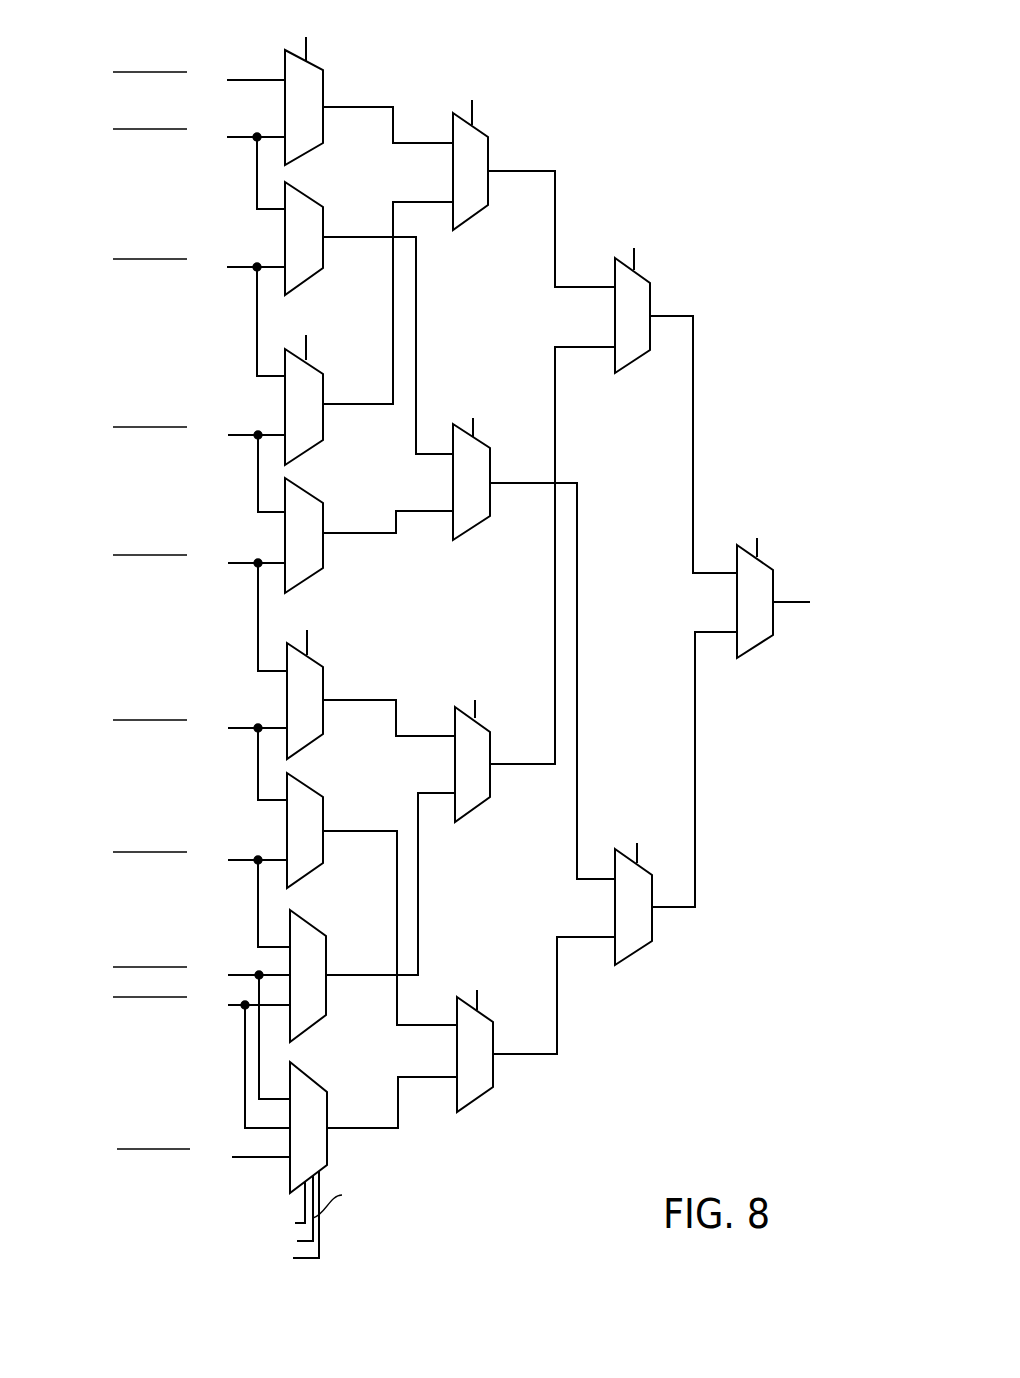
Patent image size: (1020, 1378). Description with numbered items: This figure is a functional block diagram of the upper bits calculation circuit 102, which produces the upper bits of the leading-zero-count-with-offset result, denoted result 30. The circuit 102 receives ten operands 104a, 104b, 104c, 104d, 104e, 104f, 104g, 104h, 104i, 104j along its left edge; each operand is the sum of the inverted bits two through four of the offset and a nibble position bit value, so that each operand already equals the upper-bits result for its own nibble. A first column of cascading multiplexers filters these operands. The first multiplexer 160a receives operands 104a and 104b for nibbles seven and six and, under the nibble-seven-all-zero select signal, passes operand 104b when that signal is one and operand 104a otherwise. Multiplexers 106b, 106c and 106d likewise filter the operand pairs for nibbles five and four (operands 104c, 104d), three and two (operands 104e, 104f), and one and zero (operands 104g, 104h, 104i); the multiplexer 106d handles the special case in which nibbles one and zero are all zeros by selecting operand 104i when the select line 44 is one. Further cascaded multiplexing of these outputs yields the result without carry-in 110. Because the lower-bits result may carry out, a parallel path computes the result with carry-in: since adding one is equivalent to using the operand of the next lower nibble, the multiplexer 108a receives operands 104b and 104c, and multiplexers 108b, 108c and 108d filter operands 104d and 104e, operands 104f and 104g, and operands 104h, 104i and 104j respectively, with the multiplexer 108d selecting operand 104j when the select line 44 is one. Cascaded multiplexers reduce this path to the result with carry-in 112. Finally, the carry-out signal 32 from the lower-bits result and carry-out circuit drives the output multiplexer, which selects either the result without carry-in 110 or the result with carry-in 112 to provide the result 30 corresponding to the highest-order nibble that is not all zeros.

The upper bits calculation circuit 102 is at (633, 63).
The operand 104a is at (110, 78).
The operand 104b is at (110, 135).
The operand 104c is at (110, 265).
The operand 104d is at (110, 433).
The operand 104e is at (110, 562).
The operand 104f is at (110, 727).
The operand 104g is at (110, 858).
The operand 104h is at (112, 973).
The operand 104i is at (112, 1003).
The operand 104j is at (108, 1157).
The multiplexer (N76 without carry-in) 160a is at (283, 51).
The MUX 108a is at (312, 197).
The MUX 106b is at (313, 365).
The MUX 108b is at (313, 500).
The MUX 106c is at (313, 658).
The MUX 108c is at (313, 793).
The MUX 106d is at (315, 931).
The MUX 108d is at (315, 1083).
The RESULT 5:2 (without carry-in) 110 is at (752, 290).
The RESULT 5:2 (with carry-in) 112 is at (730, 940).
The 10CARRYOUT signal 32 is at (767, 518).
The RESULT 5:2 30 is at (837, 627).
The select line N10allzero 44 is at (215, 1258).